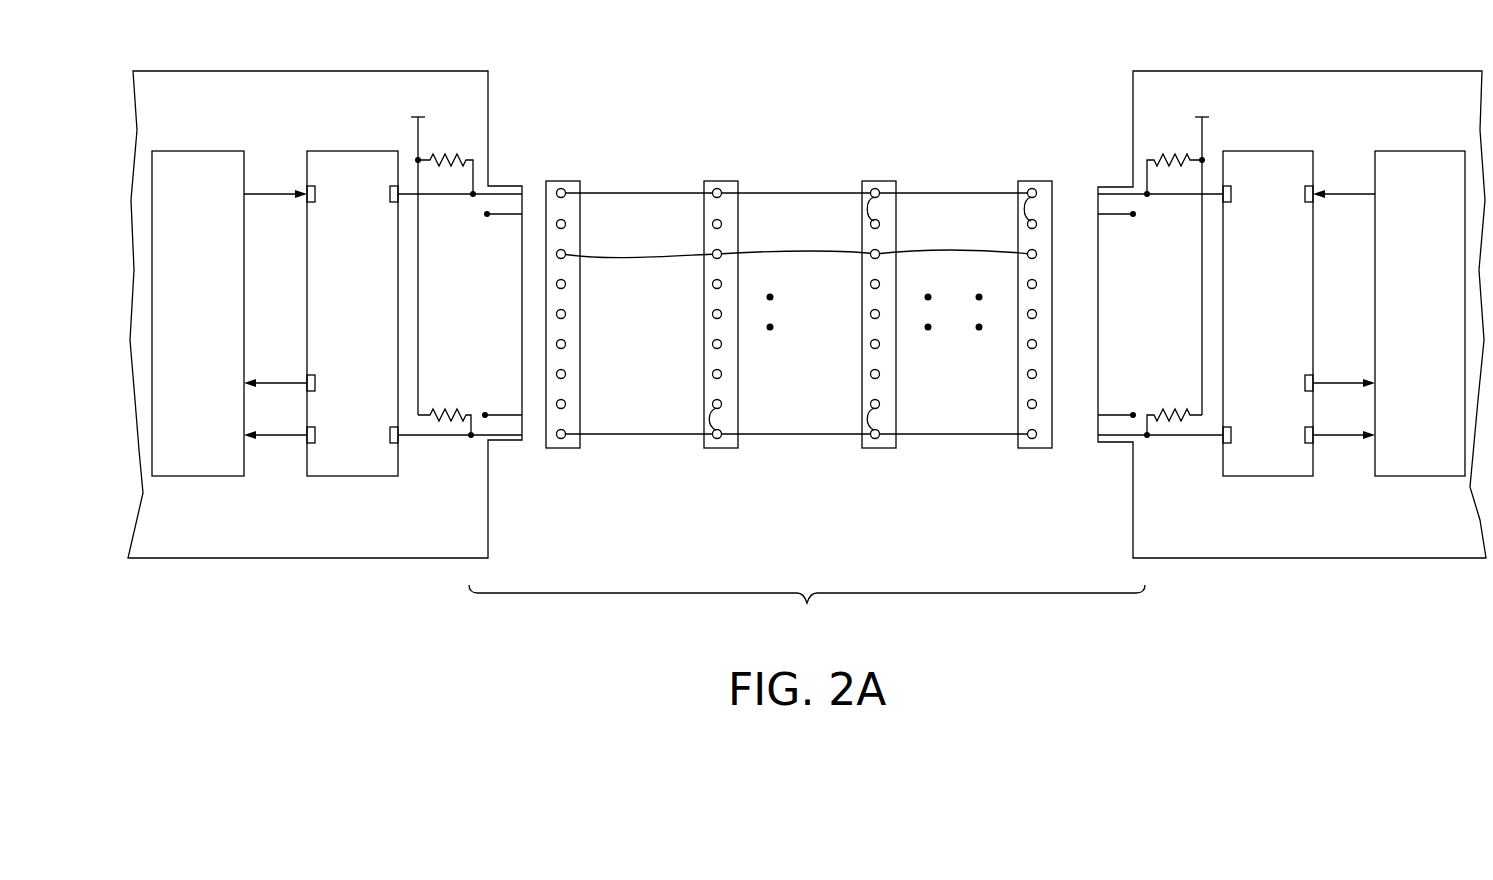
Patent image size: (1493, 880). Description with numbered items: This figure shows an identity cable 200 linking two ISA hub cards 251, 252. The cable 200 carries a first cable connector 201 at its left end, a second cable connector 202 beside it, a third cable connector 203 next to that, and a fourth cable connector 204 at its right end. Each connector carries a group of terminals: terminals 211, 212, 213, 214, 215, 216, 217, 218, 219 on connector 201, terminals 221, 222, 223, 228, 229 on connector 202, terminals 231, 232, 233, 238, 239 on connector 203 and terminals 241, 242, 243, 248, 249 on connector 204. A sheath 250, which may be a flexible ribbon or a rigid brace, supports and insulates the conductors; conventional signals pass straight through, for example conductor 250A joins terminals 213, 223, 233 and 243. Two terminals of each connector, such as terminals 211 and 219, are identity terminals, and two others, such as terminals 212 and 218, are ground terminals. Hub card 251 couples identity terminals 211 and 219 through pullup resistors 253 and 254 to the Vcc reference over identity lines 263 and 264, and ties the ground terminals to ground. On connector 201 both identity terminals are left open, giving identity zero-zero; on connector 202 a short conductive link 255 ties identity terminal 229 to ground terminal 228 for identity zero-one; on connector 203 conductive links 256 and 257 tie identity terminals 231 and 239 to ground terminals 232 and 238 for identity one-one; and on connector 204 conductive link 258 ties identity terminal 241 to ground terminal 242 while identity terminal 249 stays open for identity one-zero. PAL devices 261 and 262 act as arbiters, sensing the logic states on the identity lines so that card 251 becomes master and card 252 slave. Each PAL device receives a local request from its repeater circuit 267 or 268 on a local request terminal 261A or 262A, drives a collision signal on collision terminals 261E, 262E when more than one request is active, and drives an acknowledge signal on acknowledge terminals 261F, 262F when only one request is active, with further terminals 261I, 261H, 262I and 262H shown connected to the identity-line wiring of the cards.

The identity cable 200 is at (770, 176).
The first cable connector 201 is at (552, 180).
The second cable connector 202 is at (726, 180).
The third cable connector 203 is at (886, 180).
The fourth cable connector 204 is at (1025, 180).
The identity terminal 211 is at (566, 191).
The ground terminal 212 is at (566, 224).
The terminal 213 is at (566, 254).
The terminal 214 is at (566, 284).
The terminal 215 is at (566, 314).
The terminal 216 is at (566, 344).
The terminal 217 is at (566, 374).
The ground terminal 218 is at (566, 404).
The identity terminal 219 is at (566, 434).
The identity terminal 221 is at (721, 195).
The terminal 222 is at (721, 226).
The terminal 223 is at (721, 256).
The ground terminal 228 is at (721, 404).
The identity terminal 229 is at (721, 434).
The identity terminal 231 is at (879, 195).
The ground terminal 232 is at (879, 226).
The terminal 233 is at (879, 256).
The ground terminal 238 is at (879, 404).
The identity terminal 239 is at (879, 434).
The identity terminal 241 is at (1028, 194).
The ground terminal 242 is at (1028, 224).
The terminal 243 is at (1028, 254).
The terminal 248 is at (1028, 404).
The identity terminal 249 is at (1028, 434).
The sheath 250 is at (836, 326).
The conductor 250A is at (668, 258).
The ISA hub card 251 is at (342, 72).
The ISA hub card 252 is at (1282, 72).
The pullup resistor 253 is at (450, 157).
The pullup resistor 254 is at (452, 410).
The short conductive link 255 is at (709, 420).
The conductive link 256 is at (867, 209).
The conductive link 257 is at (867, 420).
The conductive link 258 is at (1025, 209).
The PAL device 261 is at (331, 331).
The local request terminal 261A is at (346, 184).
The PAL pin I 261I is at (388, 193).
The acknowledge terminal 261F is at (342, 373).
The collision terminal 261E is at (342, 425).
The PAL pin H 261H is at (388, 436).
The PAL device 262 is at (1245, 331).
The PAL input pin A 262A is at (1302, 195).
The PAL pin I 262I is at (1233, 193).
The acknowledge terminal 262F is at (1302, 383).
The collision terminal 262E is at (1302, 435).
The PAL pin H 262H is at (1233, 436).
The identity line 263 is at (442, 197).
The identity line 264 is at (441, 438).
The repeater circuit 267 is at (218, 372).
The repeater circuit 268 is at (1443, 372).